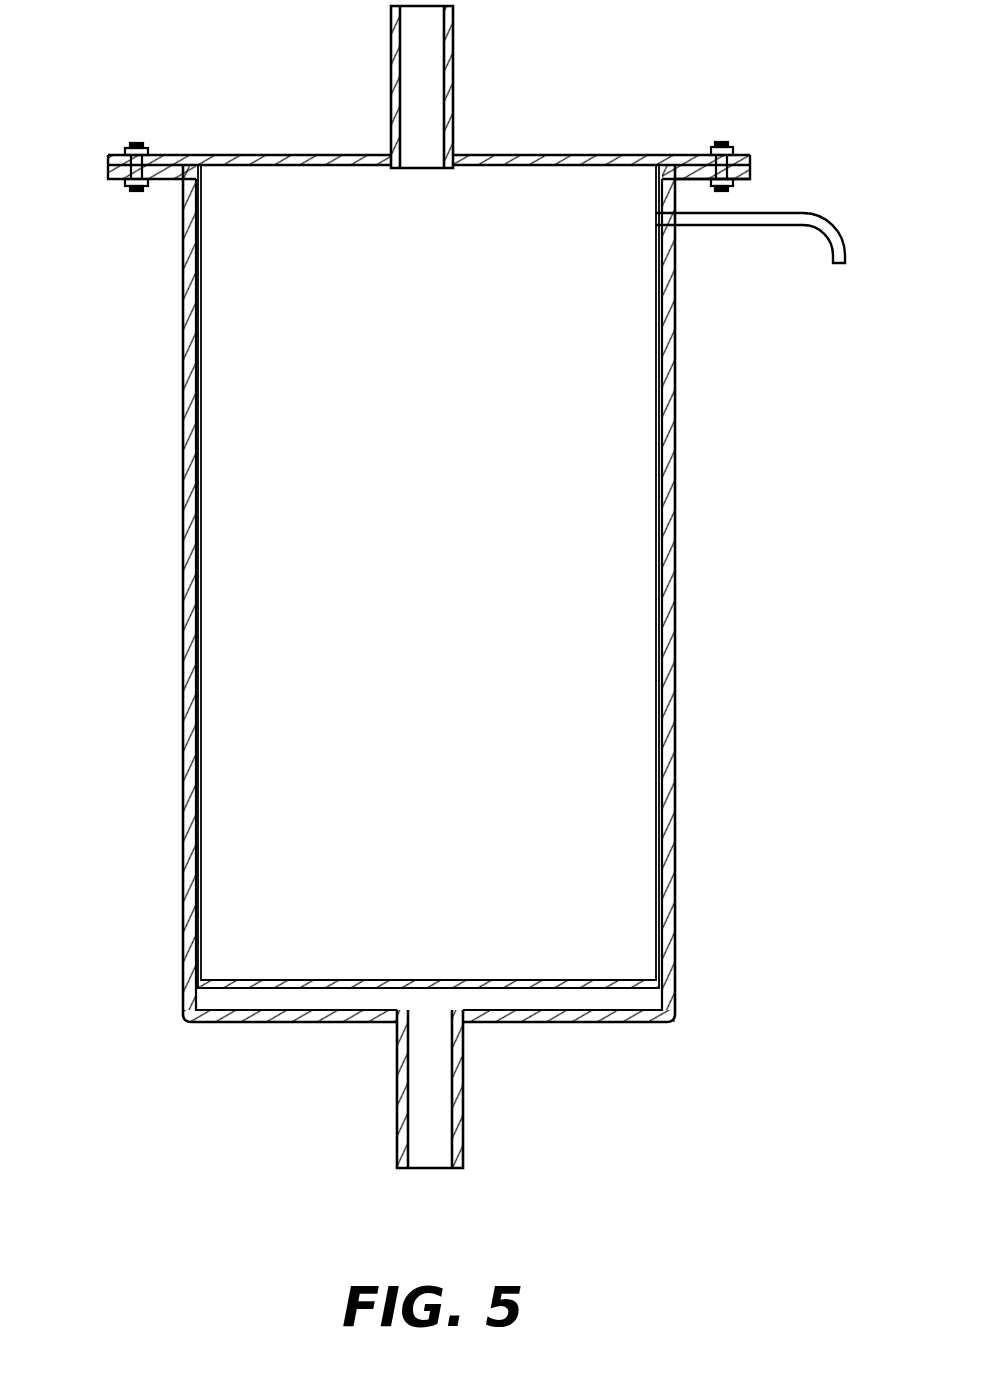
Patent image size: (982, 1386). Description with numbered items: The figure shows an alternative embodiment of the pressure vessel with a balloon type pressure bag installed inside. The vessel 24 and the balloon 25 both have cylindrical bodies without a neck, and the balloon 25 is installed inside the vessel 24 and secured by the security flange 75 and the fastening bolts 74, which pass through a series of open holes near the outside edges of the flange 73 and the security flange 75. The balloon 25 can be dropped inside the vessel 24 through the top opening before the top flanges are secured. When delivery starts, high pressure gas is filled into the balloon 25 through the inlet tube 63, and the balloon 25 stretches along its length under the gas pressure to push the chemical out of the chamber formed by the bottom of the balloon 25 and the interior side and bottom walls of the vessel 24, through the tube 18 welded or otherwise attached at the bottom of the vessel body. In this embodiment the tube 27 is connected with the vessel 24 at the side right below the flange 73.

The tube 18 is at (397, 1130).
The vessel 24 is at (183, 395).
The balloon 25 is at (650, 987).
The tube 27 is at (766, 220).
The inlet tube 63 is at (455, 45).
The flange 73 is at (752, 172).
The fastening bolts 74 is at (136, 191).
The security flange 75 is at (288, 155).